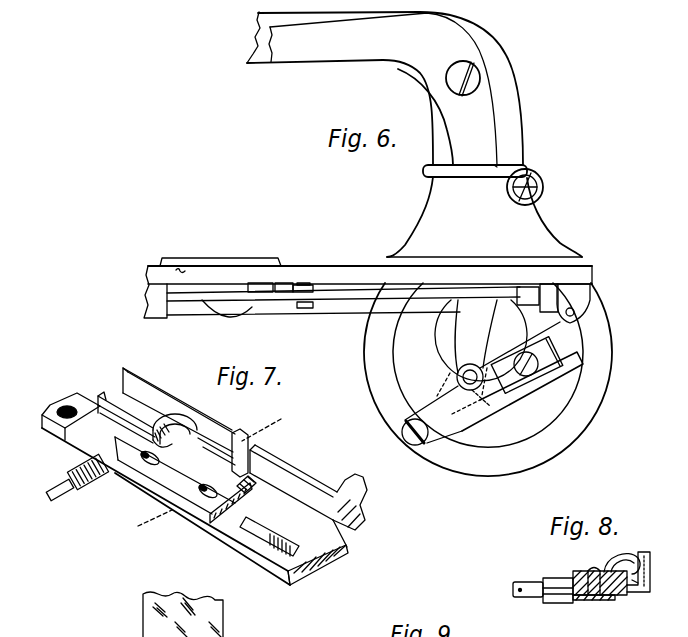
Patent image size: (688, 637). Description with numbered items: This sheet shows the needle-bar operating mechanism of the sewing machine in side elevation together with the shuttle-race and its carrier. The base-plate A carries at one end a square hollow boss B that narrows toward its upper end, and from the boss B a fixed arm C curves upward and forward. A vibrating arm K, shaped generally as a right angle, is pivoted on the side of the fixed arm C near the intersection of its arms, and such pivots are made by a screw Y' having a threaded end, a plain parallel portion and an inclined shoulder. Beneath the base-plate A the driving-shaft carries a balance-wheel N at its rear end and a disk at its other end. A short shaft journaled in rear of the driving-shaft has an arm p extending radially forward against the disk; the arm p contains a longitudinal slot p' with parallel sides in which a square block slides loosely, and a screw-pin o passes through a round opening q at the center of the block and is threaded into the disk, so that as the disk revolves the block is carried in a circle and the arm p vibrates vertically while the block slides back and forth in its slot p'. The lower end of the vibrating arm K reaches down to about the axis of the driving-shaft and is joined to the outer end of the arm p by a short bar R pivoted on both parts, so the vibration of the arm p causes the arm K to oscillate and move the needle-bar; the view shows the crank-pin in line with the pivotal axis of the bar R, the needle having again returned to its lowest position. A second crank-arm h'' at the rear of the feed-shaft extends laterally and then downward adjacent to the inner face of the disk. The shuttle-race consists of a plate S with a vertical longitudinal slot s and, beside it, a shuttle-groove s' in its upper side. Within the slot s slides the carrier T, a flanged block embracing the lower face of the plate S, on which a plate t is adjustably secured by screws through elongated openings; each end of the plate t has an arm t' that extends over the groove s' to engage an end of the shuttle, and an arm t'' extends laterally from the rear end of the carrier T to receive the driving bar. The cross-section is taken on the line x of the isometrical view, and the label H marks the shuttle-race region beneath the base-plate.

In FIG. 6, the vibrating arm K is at (387, 192).
In FIG. 6, the arm C is at (503, 141).
In FIG. 6, the screw Y' is at (535, 187).
In FIG. 6, the boss B is at (484, 217).
In FIG. 6, the base-plate A is at (585, 275).
In FIG. 6, the second crank-arm h'' is at (528, 296).
In FIG. 6, the shuttle race H is at (190, 299).
In FIG. 6, the balance-wheel N is at (620, 384).
In FIG. 6, the short bar R is at (442, 404).
In FIG. 6, the arm p is at (526, 376).
In FIG. 6, the slot p' is at (522, 370).
In FIG. 6, the round opening q is at (490, 389).
In FIG. 6, the screw-pin o is at (522, 364).
In FIG. 7, the shuttle-race S is at (99, 406).
In FIG. 8, the shuttle-race S is at (618, 596).
In FIG. 7, the shuttle-groove s' is at (201, 450).
In FIG. 7, the slot s is at (204, 494).
In FIG. 8, the slot s is at (633, 573).
In FIG. 7, the arm t' is at (213, 444).
In FIG. 8, the arm t' is at (622, 553).
In FIG. 7, the plate t is at (245, 457).
In FIG. 8, the plate t is at (600, 572).
In FIG. 7, the arm t'' is at (71, 482).
In FIG. 7, the section line x is at (209, 472).
In FIG. 7, the carrier T is at (213, 538).
In FIG. 8, the carrier T is at (596, 598).